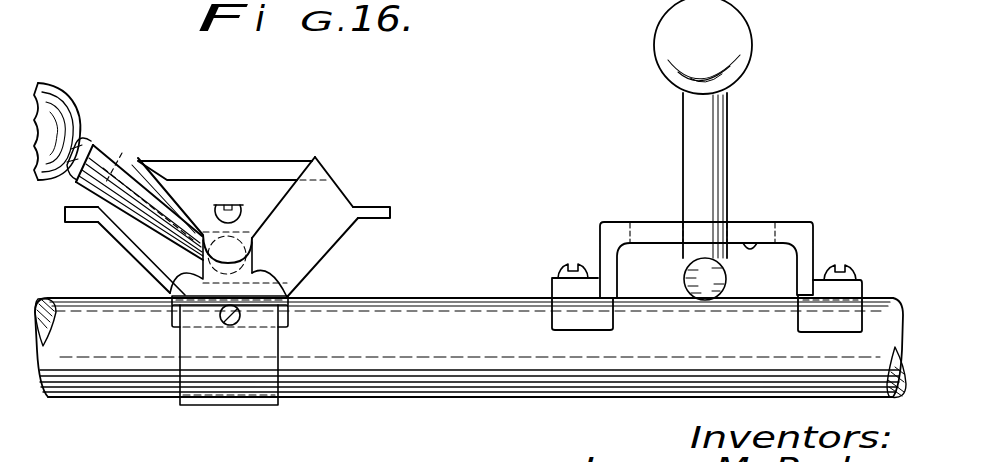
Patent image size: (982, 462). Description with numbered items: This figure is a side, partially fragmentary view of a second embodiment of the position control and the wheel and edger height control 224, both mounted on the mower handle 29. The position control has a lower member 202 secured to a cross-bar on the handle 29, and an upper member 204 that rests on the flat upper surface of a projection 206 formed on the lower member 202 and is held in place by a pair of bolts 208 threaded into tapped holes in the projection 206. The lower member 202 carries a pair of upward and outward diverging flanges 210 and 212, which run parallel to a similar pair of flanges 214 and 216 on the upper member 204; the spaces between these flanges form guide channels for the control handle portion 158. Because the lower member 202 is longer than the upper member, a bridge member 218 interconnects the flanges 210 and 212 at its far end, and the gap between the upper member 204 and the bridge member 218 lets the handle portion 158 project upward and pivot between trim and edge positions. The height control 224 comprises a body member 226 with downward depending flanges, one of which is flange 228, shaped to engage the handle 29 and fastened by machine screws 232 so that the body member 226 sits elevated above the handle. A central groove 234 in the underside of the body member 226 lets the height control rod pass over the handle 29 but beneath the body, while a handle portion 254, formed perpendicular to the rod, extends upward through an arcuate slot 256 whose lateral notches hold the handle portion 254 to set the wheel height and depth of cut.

The mower handle 29 is at (452, 378).
The control handle portion 158 is at (107, 150).
The lower member 202 is at (307, 268).
The upper member 204 is at (271, 220).
The projection 206 is at (294, 283).
The bolts 208 is at (242, 218).
The flange 210 is at (114, 238).
The flange 212 is at (333, 250).
The flange 214 is at (172, 161).
The flange 216 is at (290, 186).
The bridge member 218 is at (253, 168).
The wheel and edger height control 224 is at (149, 273).
The body member 226 is at (813, 237).
The flange 228 is at (575, 320).
The machine screws 232 is at (562, 277).
The central groove 234 is at (752, 250).
The handle portion 254 is at (713, 128).
The arcuate slot 256 is at (700, 290).